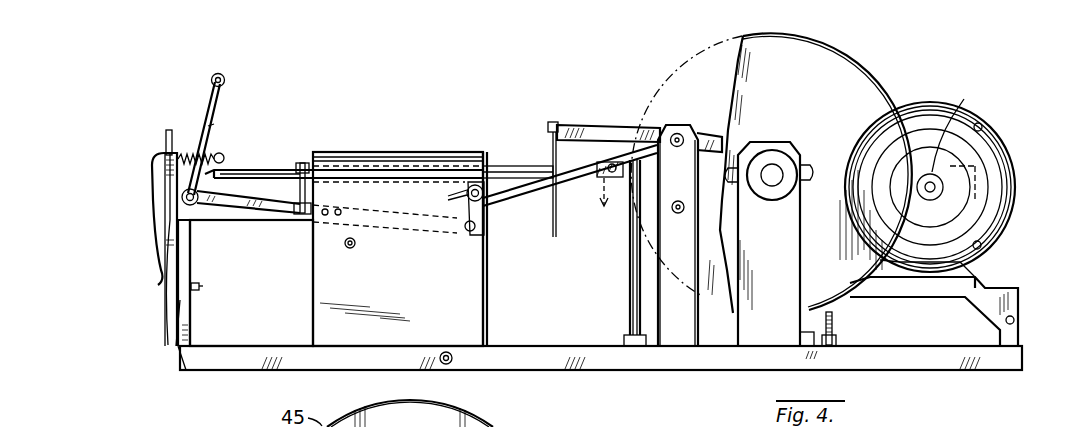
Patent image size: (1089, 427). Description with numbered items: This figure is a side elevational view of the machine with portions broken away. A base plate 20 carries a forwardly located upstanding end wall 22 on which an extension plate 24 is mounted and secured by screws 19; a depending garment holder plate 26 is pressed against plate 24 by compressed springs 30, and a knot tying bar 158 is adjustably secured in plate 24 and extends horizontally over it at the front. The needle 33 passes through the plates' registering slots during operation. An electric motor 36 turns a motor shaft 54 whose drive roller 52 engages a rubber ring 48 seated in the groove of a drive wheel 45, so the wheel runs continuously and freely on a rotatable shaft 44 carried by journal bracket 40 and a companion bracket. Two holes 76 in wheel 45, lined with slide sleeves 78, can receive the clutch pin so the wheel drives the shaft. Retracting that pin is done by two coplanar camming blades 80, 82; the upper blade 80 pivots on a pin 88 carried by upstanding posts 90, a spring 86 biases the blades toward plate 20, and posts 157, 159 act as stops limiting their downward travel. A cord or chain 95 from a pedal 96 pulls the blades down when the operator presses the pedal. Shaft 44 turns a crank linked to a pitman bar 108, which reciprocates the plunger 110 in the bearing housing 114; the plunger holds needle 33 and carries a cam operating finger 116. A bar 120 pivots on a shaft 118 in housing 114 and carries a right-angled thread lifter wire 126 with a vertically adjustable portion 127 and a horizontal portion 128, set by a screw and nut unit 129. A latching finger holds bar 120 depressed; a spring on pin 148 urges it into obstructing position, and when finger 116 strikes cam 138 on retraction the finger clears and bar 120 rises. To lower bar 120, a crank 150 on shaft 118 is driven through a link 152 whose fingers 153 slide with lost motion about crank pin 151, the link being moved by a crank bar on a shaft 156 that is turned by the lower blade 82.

The screws 19 is at (196, 318).
The base plate 20 is at (276, 363).
The upstanding end wall 22 is at (183, 309).
The extension plate 24 is at (170, 195).
The garment holder plate 26 is at (157, 230).
The compressed springs 30 is at (207, 150).
The needle 33 is at (270, 170).
The electric motor 36 is at (987, 184).
The journal bracket 40 is at (765, 317).
The rotatable shaft 44 is at (780, 167).
The drive wheel 45 is at (878, 100).
The rubber ring 48 is at (866, 38).
The drive roller 52 is at (984, 92).
The motor shaft 54 is at (930, 198).
The holes 76 is at (804, 175).
The slide sleeves 78 is at (810, 173).
The upper camming blade 80 is at (600, 127).
The lower camming blade 82 is at (714, 212).
The spring 86 is at (835, 317).
The pin 88 is at (680, 132).
The upstanding posts 90 is at (680, 345).
The cord or chain 95 is at (553, 218).
The pedal 96 is at (550, 120).
The pitman bar 108 is at (648, 164).
The plunger 110 is at (489, 162).
The bearing housing 114 is at (382, 159).
The cam operating finger 116 is at (296, 210).
The shaft 118 is at (474, 234).
The bar 120 is at (248, 206).
The thread lifter wire 126 is at (216, 119).
The adjustable portion 127 is at (208, 94).
The horizontal portion 128 is at (220, 74).
The setting screw and nut unit 129 is at (191, 209).
The cam 138 is at (302, 215).
The pin or bolt 148 is at (354, 246).
The crank 150 is at (486, 203).
The crank pin 151 is at (474, 181).
The link 152 is at (518, 179).
The fingers 153 is at (459, 194).
The shaft 156 is at (677, 212).
The post 157 is at (630, 302).
The knot tying bar 158 is at (166, 139).
The post 159 is at (812, 345).